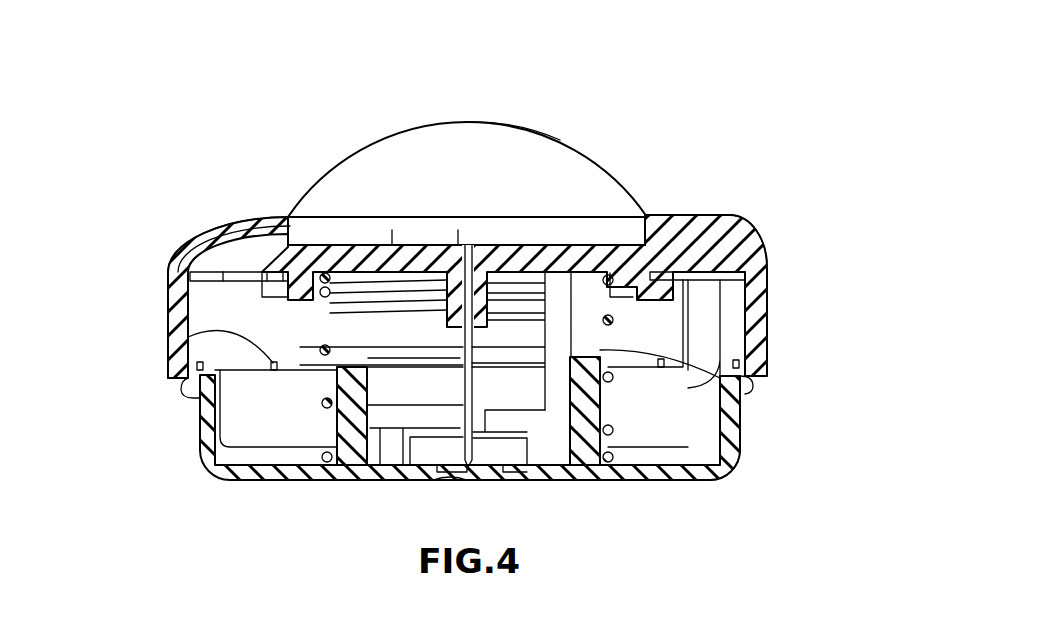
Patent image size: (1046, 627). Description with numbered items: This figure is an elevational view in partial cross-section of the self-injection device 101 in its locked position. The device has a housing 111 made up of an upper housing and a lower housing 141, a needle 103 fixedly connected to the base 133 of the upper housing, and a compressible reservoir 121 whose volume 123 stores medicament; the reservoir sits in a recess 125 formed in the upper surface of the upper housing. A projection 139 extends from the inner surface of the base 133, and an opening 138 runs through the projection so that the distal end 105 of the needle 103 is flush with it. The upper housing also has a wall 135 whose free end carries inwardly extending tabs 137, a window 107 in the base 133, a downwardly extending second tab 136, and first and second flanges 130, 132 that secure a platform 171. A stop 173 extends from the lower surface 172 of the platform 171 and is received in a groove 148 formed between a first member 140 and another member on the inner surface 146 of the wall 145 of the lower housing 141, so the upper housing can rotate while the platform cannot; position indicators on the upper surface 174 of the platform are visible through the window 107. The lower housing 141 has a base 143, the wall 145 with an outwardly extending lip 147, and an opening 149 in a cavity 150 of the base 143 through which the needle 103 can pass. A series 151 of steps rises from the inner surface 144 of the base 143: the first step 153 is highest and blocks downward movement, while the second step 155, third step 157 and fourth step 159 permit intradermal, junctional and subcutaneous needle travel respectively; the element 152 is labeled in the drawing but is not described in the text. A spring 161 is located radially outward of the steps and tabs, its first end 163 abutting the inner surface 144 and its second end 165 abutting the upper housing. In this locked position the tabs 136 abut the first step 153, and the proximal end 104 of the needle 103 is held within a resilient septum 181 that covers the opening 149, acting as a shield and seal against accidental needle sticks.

The self-injection device 101 is at (694, 153).
The needle 103 is at (456, 347).
The proximal end 104 is at (466, 480).
The distal end 105 is at (459, 245).
The window 107 is at (240, 228).
The housing 111 is at (757, 221).
The compressible reservoir 121 is at (592, 140).
The volume 123 is at (524, 133).
The recess 125 is at (290, 217).
The first flange 130 is at (192, 262).
The second flange 132 is at (722, 312).
The base 133 is at (680, 215).
The wall 135 is at (170, 316).
The second tab 136 is at (600, 342).
The inwardly extending tabs 137 is at (745, 388).
The opening 138 is at (503, 245).
The projection 139 is at (392, 245).
The first member 140 is at (690, 440).
The lower housing 141 is at (208, 485).
The base 143 is at (305, 483).
The inner surface 144 is at (240, 458).
The wall 145 is at (732, 452).
The inner surface 146 is at (213, 418).
The lip 147 is at (172, 362).
The groove 148 is at (694, 484).
The opening 149 is at (440, 478).
The cavity 150 is at (445, 465).
The series of steps 151 is at (628, 398).
The left post 152 is at (325, 426).
The first step 153 is at (748, 367).
The second step 155 is at (560, 368).
The third step 157 is at (531, 410).
The fourth step 159 is at (420, 424).
The spring 161 is at (300, 347).
The first end 163 is at (599, 468).
The second end 165 is at (262, 272).
The platform 171 is at (218, 296).
The lower surface 172 is at (677, 296).
The stop 173 is at (760, 342).
The upper surface 174 is at (722, 258).
The septum 181 is at (528, 430).